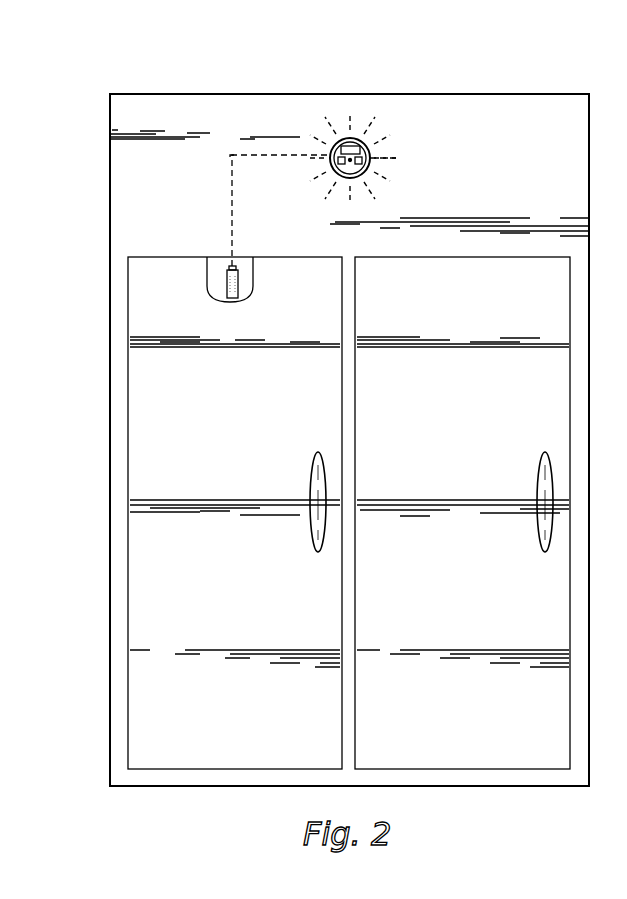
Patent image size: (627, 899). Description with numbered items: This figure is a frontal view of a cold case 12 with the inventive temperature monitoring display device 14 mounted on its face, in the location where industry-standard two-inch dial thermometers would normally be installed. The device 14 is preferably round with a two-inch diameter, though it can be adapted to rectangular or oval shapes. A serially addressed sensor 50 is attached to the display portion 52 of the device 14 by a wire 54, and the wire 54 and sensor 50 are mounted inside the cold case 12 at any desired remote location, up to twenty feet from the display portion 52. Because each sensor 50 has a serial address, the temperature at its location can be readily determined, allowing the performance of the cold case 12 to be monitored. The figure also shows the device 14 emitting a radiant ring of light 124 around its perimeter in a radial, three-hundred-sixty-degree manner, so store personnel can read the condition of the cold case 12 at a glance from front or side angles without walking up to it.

The cold case 12 is at (490, 94).
The temperature monitoring display device 14 is at (355, 118).
The serially addressed sensor 50 is at (232, 283).
The display portion 52 is at (349, 138).
The wire 54 is at (244, 152).
The radiant ring of light 124 is at (374, 133).